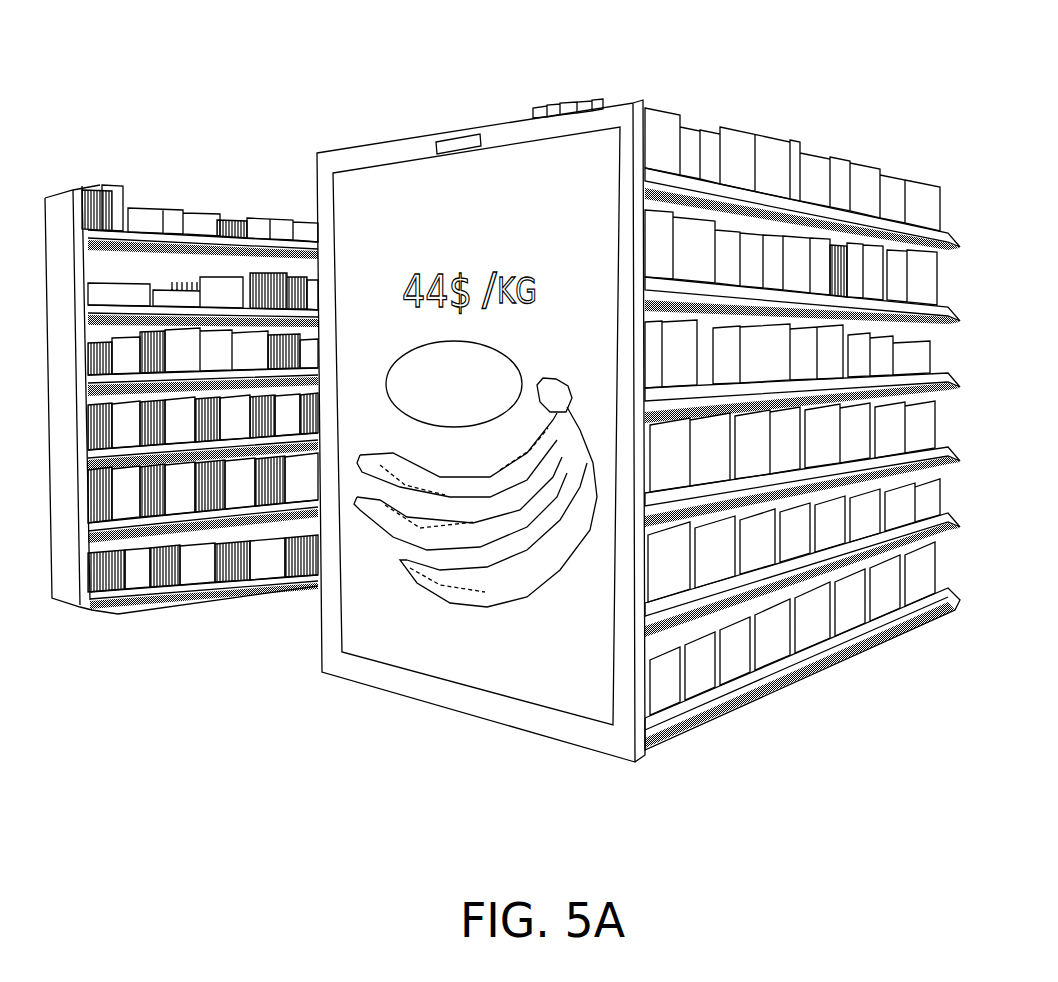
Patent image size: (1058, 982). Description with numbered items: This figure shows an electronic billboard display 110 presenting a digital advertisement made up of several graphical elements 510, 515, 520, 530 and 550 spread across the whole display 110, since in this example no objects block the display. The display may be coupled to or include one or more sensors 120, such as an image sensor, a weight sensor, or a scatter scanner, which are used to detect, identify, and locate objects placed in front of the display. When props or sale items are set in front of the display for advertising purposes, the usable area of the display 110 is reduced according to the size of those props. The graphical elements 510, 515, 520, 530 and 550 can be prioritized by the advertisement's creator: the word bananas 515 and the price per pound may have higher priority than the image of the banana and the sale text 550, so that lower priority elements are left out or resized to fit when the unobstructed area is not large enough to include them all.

The electronic billboard display 110 is at (548, 155).
The sensors 120 is at (460, 128).
The graphical element 510 is at (357, 612).
The word bananas 515 is at (397, 193).
The graphical element 520 is at (415, 668).
The graphical element 530 is at (548, 688).
The image of the banana and the sale text 550 is at (397, 393).